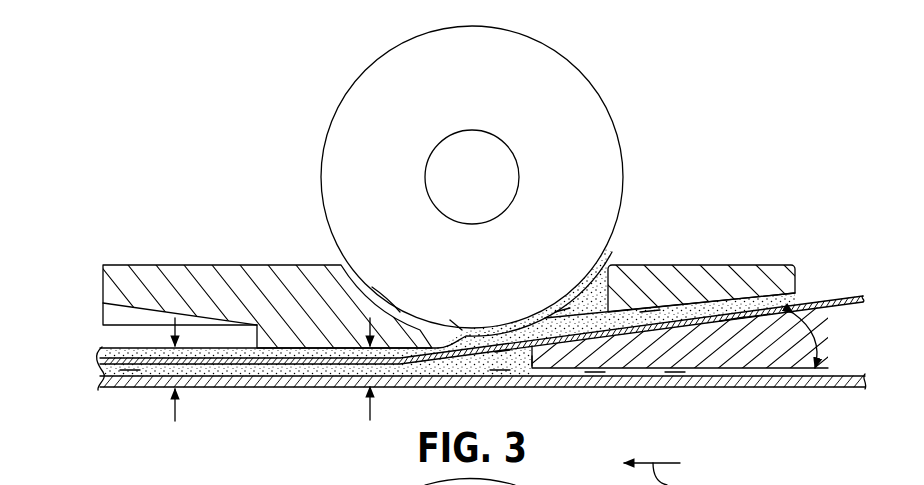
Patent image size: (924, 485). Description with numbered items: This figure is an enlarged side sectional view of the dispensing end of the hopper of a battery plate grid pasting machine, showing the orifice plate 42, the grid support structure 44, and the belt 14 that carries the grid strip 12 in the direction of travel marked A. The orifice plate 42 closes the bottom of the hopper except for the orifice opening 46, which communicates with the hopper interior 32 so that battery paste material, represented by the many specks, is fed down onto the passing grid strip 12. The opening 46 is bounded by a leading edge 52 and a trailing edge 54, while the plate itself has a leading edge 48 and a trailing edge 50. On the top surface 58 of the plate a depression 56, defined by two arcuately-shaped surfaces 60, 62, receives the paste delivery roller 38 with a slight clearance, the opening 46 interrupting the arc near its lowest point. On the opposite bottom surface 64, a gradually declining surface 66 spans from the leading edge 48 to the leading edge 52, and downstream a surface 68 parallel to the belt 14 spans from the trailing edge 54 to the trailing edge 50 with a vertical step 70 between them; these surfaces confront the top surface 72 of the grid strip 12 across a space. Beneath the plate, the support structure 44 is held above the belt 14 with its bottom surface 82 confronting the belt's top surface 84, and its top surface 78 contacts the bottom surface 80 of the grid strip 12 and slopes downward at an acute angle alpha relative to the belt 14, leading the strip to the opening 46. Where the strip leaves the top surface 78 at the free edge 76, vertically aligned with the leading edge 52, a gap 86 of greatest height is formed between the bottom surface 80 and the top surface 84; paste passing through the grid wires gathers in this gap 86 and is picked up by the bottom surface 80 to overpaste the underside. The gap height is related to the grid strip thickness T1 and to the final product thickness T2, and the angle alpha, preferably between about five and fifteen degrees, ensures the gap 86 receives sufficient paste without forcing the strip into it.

The grid strip 12 is at (114, 346).
The belt 14 is at (205, 392).
The interior 32 is at (281, 142).
The paste delivery roller 38 is at (623, 160).
The orifice plate 42 is at (218, 297).
The grid support structure 44 is at (767, 327).
The orifice opening 46 is at (462, 345).
The leading edge 48 is at (783, 294).
The trailing edge 50 is at (102, 297).
The leading edge 52 is at (500, 357).
The trailing edge 54 is at (462, 328).
The depression 56 is at (600, 292).
The top surface 58 is at (690, 265).
The arcuately-shaped surface 60 is at (563, 320).
The arcuately-shaped surface 62 is at (385, 300).
The bottom surface 64 is at (773, 307).
The gradually declining surface 66 is at (766, 312).
The surface 68 is at (288, 348).
The vertical step 70 is at (250, 345).
The top surface 72 is at (132, 366).
The free edge 76 is at (531, 360).
The top surface 78 is at (738, 315).
The bottom surface 80 is at (665, 330).
The bottom surface 82 is at (593, 373).
The top surface 84 is at (673, 370).
The gap 86 is at (500, 367).
The thickness dimension T1 is at (370, 410).
The final product thickness dimension T2 is at (175, 412).
The acute angle alpha is at (813, 337).
The web direction A is at (662, 474).